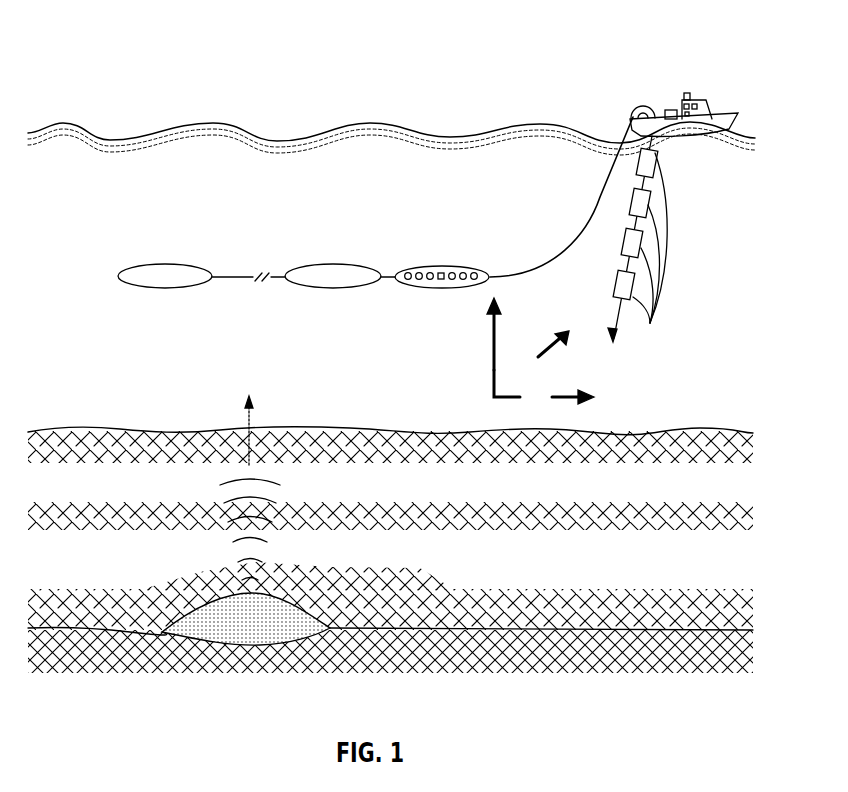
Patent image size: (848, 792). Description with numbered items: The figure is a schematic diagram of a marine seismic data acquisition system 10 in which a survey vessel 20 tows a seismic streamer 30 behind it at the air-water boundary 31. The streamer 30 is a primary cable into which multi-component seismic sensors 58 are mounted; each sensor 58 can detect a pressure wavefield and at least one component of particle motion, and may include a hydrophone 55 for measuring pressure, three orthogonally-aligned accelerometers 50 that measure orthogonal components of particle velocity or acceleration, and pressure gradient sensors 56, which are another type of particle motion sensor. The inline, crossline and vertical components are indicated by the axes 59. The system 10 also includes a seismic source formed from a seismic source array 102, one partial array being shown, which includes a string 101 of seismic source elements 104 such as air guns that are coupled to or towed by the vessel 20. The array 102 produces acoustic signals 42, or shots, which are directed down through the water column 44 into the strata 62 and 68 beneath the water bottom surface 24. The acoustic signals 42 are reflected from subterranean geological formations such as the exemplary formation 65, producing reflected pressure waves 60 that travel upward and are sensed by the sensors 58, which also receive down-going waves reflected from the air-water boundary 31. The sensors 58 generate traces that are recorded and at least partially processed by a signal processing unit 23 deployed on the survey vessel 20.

The marine seismic data acquisition system 10 is at (204, 98).
The survey vessel 20 is at (730, 112).
The signal processing unit 23 is at (670, 110).
The water bottom surface 24 is at (651, 430).
The seismic streamer 30 is at (599, 196).
The air-water boundary 31 is at (345, 124).
The acoustic signal 42 is at (621, 342).
The water column 44 is at (677, 242).
The accelerometers 50 is at (420, 272).
The hydrophone 55 is at (441, 280).
The pressure gradient sensors 56 is at (464, 272).
The multi-component seismic sensor 58 is at (172, 265).
The axes 59 is at (487, 402).
The pressure waves 60 is at (223, 548).
The strata 62 is at (371, 607).
The formation 65 is at (237, 634).
The strata 68 is at (371, 667).
The string 101 is at (672, 241).
The seismic source array 102 is at (673, 273).
The seismic source elements 104 is at (641, 248).